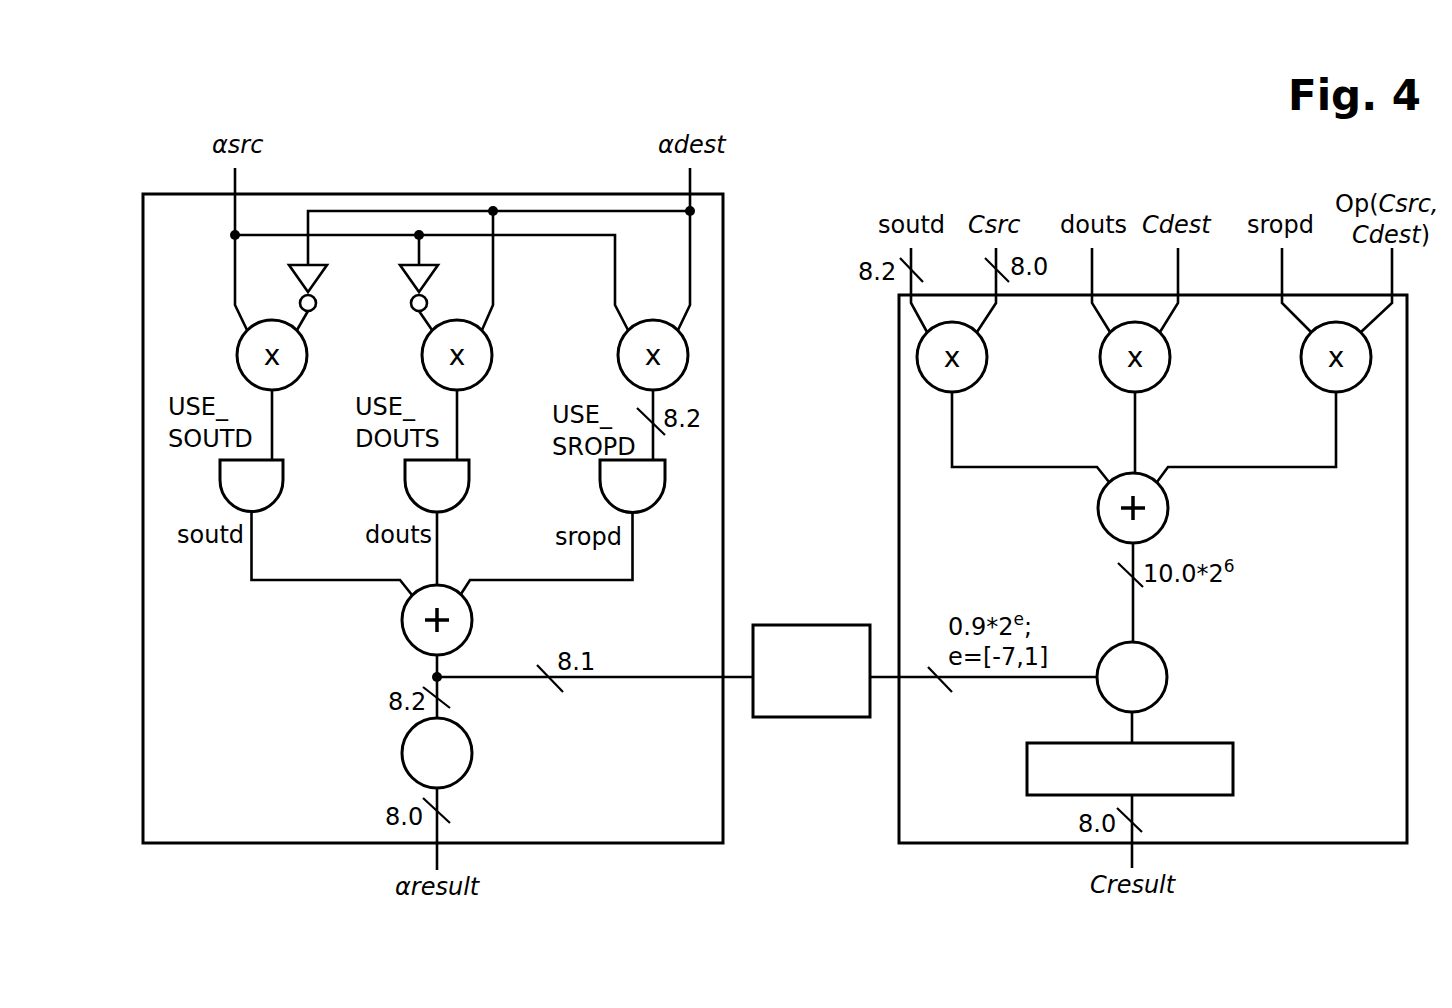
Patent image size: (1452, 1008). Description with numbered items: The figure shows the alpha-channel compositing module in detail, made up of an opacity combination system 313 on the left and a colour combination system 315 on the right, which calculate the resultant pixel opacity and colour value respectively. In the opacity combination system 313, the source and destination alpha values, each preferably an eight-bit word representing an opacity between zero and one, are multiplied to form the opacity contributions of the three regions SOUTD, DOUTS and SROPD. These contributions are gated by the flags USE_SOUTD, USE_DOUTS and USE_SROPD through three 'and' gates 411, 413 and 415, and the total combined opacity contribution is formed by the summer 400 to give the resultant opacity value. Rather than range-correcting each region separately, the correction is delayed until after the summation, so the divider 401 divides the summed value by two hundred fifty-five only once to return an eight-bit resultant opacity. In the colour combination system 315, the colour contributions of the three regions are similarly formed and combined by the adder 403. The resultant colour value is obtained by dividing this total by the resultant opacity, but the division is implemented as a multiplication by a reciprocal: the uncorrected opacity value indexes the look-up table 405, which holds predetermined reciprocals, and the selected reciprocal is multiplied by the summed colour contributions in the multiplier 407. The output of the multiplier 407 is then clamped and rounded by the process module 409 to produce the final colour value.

The opacity combination system 313 is at (236, 82).
The colour combination system 315 is at (1283, 843).
The summer 400 is at (398, 623).
The divider 401 is at (472, 753).
The adder 403 is at (1166, 517).
The look-up table 405 is at (800, 625).
The multiplier 407 is at (1167, 675).
The process module 409 is at (1233, 767).
The 'and' gate 411 is at (284, 478).
The 'and' gate 413 is at (470, 478).
The 'and' gate 415 is at (666, 480).